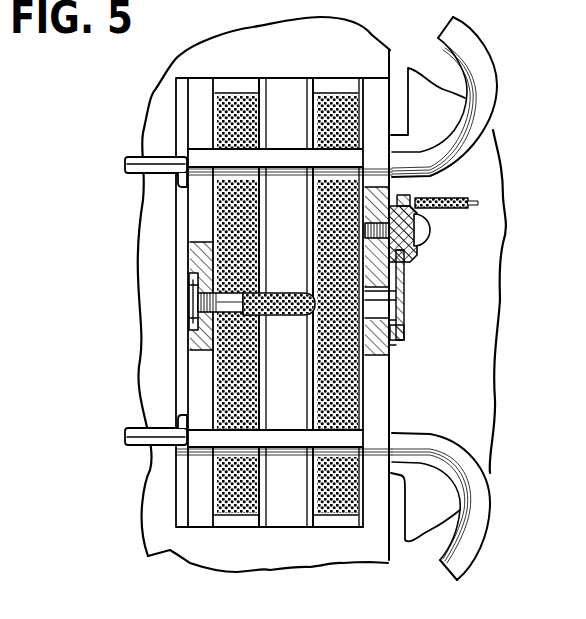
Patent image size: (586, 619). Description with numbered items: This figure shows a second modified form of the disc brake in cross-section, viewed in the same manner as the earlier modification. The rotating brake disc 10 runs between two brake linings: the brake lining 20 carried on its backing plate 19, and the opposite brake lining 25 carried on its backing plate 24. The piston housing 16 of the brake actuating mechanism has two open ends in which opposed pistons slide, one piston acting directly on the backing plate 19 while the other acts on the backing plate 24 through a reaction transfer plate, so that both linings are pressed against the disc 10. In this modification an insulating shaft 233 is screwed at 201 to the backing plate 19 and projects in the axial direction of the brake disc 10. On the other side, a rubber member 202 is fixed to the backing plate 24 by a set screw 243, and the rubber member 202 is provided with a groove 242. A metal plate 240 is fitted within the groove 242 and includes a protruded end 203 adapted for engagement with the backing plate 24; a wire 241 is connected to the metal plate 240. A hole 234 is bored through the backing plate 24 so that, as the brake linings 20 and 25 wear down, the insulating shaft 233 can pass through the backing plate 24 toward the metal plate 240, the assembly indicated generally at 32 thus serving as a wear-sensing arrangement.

The piston housing 16 is at (150, 242).
The backing plate 19 is at (198, 486).
The brake lining 20 is at (235, 513).
The disc 10 is at (290, 518).
The brake lining 25 is at (342, 513).
The backing plate 24 is at (375, 517).
The screw connection 201 is at (198, 295).
The insulating shaft 233 is at (317, 311).
The clamping screw assembly 32 is at (453, 282).
The wire 241 is at (450, 197).
The set screw 243 is at (418, 220).
The rubber member 202 is at (415, 257).
The groove 242 is at (404, 268).
The metal plate 240 is at (404, 302).
The hole 234 is at (404, 332).
The protruded end 203 is at (396, 345).